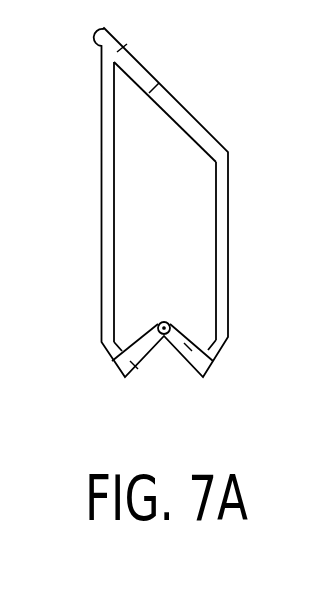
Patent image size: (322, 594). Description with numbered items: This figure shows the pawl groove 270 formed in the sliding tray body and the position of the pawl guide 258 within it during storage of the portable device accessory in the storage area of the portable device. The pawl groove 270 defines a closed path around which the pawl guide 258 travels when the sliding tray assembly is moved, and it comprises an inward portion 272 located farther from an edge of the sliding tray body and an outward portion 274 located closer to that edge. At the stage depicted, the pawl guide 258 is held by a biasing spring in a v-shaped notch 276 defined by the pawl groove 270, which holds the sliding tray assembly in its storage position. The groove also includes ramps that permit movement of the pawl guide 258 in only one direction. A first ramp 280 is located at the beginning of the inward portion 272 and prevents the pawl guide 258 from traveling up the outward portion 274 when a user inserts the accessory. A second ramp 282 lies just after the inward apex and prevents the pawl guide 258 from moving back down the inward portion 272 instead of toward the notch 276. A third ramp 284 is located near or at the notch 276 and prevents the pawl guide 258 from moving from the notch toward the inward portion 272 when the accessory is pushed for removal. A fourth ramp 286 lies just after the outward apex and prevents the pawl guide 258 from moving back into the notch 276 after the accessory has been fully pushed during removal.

The pawl groove 270 is at (219, 103).
The inward portion 272 is at (104, 104).
The outward portion 274 is at (222, 238).
The first ramp 280 is at (140, 71).
The second ramp 282 is at (112, 328).
The third ramp 284 is at (133, 365).
The notch 276 is at (171, 327).
The fourth ramp 286 is at (189, 349).
The pawl guide 258 is at (167, 320).